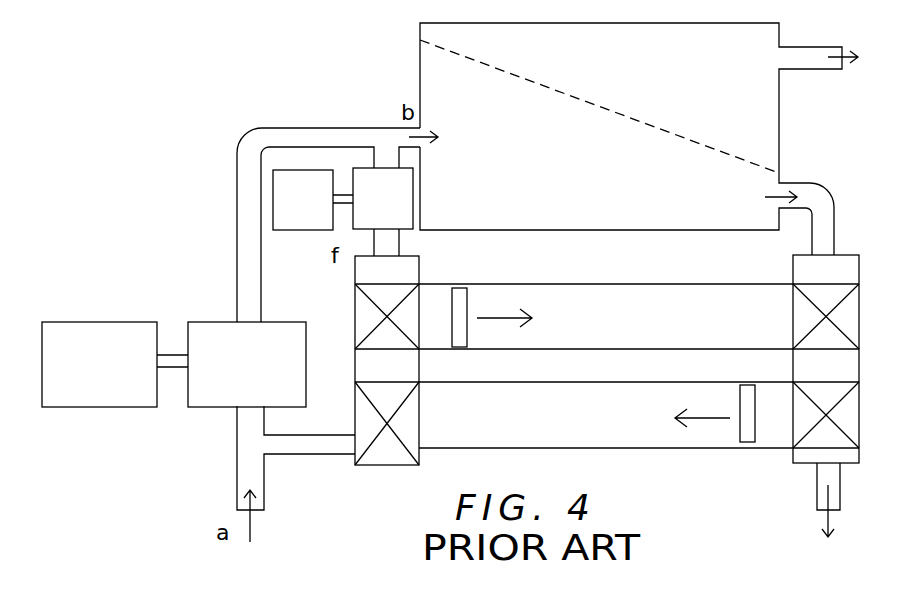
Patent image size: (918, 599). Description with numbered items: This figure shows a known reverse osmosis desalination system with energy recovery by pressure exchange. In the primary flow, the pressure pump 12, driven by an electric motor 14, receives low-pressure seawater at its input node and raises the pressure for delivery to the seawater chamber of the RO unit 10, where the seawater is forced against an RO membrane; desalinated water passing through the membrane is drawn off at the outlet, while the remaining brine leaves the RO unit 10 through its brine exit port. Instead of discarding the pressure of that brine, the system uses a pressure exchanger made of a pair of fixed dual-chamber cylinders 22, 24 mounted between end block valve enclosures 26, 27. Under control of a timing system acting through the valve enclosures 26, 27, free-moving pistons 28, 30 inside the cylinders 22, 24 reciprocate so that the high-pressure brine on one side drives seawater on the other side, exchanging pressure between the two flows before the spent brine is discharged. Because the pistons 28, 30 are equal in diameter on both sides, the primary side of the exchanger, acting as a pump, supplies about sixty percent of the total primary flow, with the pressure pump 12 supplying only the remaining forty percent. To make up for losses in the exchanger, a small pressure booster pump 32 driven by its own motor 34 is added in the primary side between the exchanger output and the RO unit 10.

The RO unit 10 is at (614, 230).
The pressure pump 12 is at (247, 364).
The electric motor 14 is at (115, 364).
The fixed dual-chamber cylinder 22 is at (606, 316).
The fixed dual-chamber cylinder 24 is at (606, 415).
The end block valve enclosure 26 is at (387, 360).
The end block valve enclosure 27 is at (820, 396).
The free-moving piston 28 is at (460, 290).
The free-moving piston 30 is at (748, 436).
The pressure booster pump 32 is at (383, 212).
The motor 34 is at (313, 200).